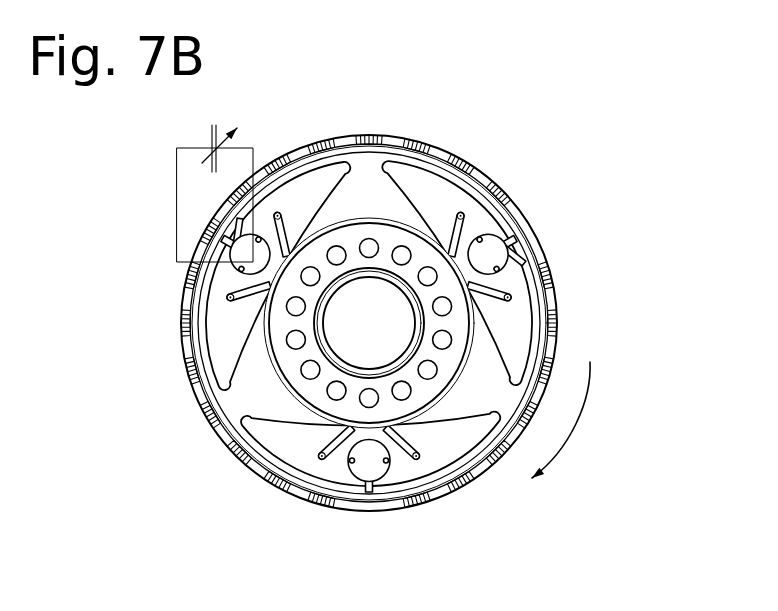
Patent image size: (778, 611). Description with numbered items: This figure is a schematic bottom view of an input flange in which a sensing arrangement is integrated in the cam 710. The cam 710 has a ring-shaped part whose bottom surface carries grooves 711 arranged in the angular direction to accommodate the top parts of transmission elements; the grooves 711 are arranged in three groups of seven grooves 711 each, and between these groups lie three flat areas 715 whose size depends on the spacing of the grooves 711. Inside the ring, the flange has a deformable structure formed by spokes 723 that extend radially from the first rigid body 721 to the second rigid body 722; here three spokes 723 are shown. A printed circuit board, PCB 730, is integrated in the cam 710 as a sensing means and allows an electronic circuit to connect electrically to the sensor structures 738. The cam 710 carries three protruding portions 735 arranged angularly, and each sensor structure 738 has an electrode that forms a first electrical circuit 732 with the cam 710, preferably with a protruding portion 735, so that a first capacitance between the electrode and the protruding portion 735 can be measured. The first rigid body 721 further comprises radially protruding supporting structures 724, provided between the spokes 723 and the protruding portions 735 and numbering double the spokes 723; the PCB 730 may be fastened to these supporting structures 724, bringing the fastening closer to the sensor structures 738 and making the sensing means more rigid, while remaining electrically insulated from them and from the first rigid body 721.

The cam 710 is at (385, 307).
The grooves 711 is at (553, 326).
The flat areas 715 is at (528, 231).
The first rigid body 721 is at (273, 322).
The second rigid body 722 is at (572, 350).
The spokes 723 is at (243, 398).
The supporting structure 724 is at (455, 450).
The printed circuit board 730 is at (420, 195).
The first electrical circuit 732 is at (177, 178).
The protruding portions 735 is at (226, 250).
The sensor structures 738 is at (356, 468).